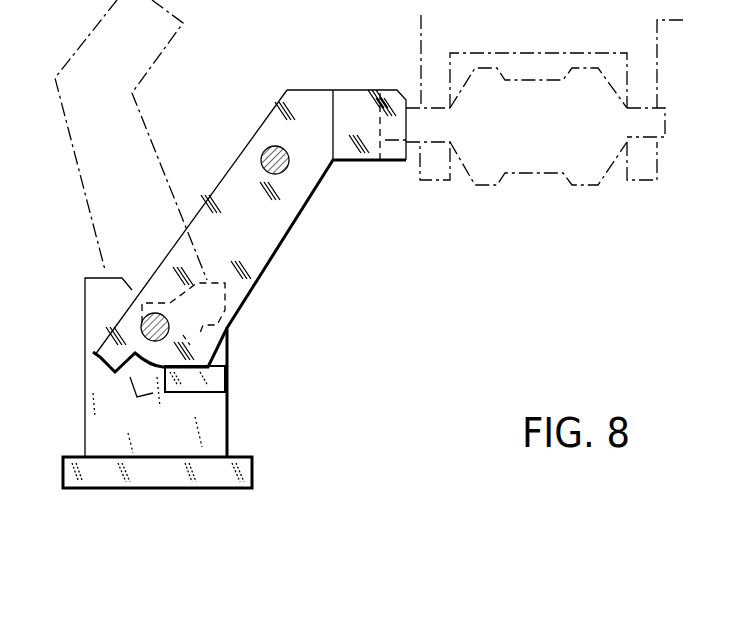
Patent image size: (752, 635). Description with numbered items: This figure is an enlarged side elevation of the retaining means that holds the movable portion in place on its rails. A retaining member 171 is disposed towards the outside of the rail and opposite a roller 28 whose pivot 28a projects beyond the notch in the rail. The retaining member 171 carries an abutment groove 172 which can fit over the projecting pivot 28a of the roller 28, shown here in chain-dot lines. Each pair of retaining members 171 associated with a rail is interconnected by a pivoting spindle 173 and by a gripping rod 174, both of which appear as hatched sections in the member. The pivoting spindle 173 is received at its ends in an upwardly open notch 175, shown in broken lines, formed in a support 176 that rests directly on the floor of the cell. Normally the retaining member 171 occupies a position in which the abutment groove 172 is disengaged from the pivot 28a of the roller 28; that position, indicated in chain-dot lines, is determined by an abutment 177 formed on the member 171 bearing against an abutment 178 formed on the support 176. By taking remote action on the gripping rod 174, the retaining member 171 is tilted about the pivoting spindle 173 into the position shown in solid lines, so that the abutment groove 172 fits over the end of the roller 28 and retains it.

The retaining member 171 is at (257, 223).
The abutment groove 172 is at (392, 92).
The pivoting spindle 173 is at (170, 325).
The gripping rod 174 is at (262, 155).
The upwardly open notch 175 is at (137, 277).
The support 176 is at (210, 440).
The abutment 177 is at (90, 353).
The abutment 178 is at (212, 378).
The roller 28 is at (590, 172).
The pivot 28a is at (410, 135).